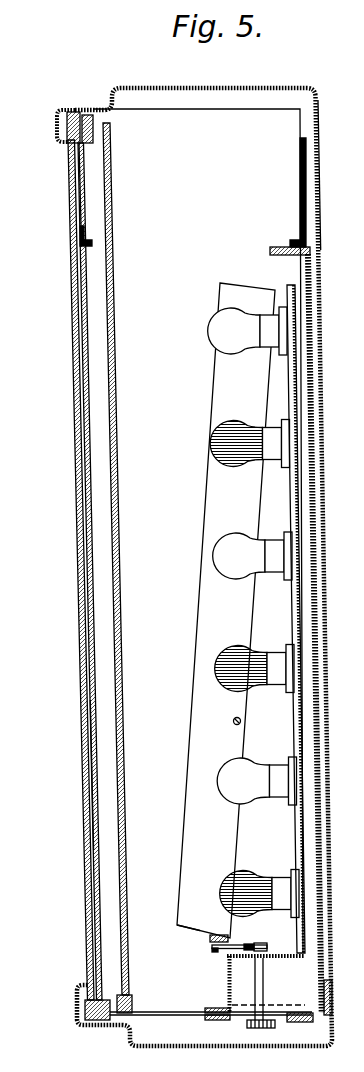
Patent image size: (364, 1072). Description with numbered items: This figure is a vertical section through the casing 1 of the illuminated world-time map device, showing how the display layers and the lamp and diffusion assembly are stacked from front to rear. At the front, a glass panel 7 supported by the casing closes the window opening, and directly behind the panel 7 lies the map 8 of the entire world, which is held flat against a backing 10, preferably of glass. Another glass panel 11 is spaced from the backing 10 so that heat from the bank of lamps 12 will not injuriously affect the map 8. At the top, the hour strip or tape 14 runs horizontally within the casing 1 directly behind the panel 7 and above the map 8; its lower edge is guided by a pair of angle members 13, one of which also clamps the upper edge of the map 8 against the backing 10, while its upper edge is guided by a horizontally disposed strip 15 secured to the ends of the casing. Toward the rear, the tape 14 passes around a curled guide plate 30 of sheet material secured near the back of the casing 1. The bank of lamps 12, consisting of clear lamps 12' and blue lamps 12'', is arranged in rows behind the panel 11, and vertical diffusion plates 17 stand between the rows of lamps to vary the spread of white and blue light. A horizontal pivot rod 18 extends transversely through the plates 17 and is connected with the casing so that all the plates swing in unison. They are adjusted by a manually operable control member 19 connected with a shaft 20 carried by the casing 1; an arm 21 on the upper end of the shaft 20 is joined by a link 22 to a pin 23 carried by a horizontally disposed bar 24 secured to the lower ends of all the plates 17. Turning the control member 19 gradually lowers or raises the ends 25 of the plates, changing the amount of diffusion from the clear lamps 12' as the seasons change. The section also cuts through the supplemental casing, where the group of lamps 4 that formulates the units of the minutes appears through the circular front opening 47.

The casing 1 is at (151, 87).
The glass panel 7 is at (75, 319).
The map 8 is at (86, 790).
The backing 10 is at (86, 394).
The glass panel 11 is at (119, 446).
The lamps 12 is at (234, 669).
The clear lamps 12' is at (233, 338).
The blue lamps 12'' is at (229, 669).
The angle members 13 is at (96, 238).
The hour strip or tape 14 is at (82, 188).
The horizontally disposed strip 15 is at (92, 133).
The vertical diffusion plates 17 is at (200, 840).
The horizontal pivot rod 18 is at (243, 722).
The manually operable control member 19 is at (250, 1026).
The shaft 20 is at (268, 995).
The arm 21 is at (262, 947).
The link 22 is at (230, 952).
The pin 23 is at (214, 950).
The horizontally disposed bar 24 is at (210, 939).
The ends 25 is at (177, 924).
The guide plate 30 is at (300, 204).
The group of lamps 4 is at (360, 401).
The front opening 47 is at (357, 435).